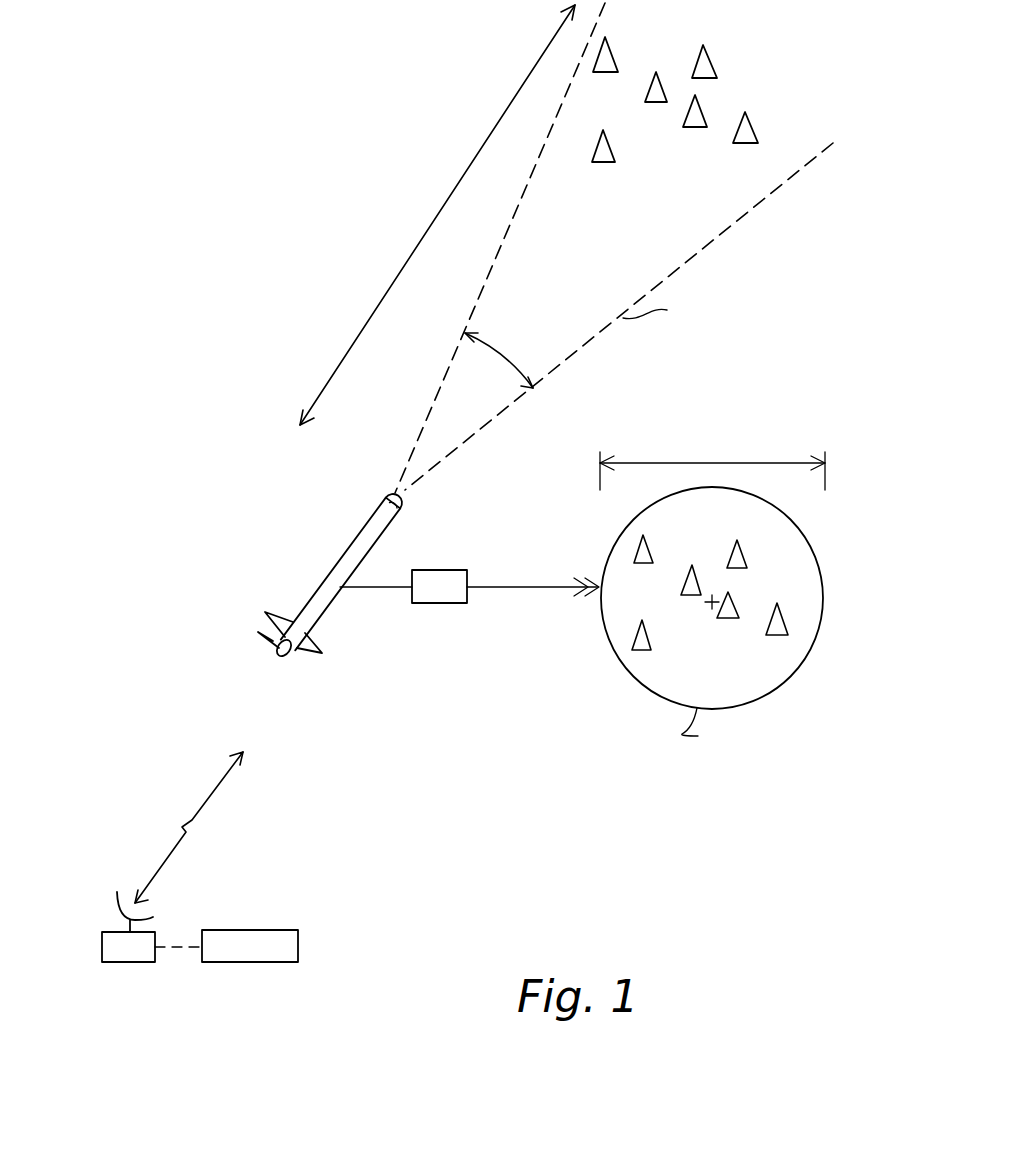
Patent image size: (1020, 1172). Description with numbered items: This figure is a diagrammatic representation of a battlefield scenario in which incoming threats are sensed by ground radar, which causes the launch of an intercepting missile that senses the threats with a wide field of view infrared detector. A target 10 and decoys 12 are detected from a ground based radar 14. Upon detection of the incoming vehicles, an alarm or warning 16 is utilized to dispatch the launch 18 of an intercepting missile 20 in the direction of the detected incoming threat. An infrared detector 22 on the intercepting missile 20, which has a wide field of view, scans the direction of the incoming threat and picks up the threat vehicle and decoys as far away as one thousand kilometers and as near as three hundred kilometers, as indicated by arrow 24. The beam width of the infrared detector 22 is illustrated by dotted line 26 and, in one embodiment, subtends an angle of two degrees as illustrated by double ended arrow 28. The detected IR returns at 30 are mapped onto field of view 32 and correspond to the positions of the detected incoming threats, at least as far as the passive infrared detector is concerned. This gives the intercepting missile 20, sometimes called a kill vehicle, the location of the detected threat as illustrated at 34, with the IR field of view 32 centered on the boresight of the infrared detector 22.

The target 10 is at (650, 91).
The decoys 12 is at (609, 52).
The ground based radar 14 is at (103, 905).
The alarm or warning 16 is at (174, 944).
The launch 18 is at (298, 945).
The intercepting missile 20 is at (340, 566).
The infrared detector 22 is at (403, 503).
The arrow 24 is at (393, 272).
The dotted line 26 is at (484, 285).
The double ended arrow 28 is at (507, 366).
The detected IR returns 30 is at (447, 570).
The field of view 32 is at (812, 532).
The location of the detected threat 34 is at (716, 600).